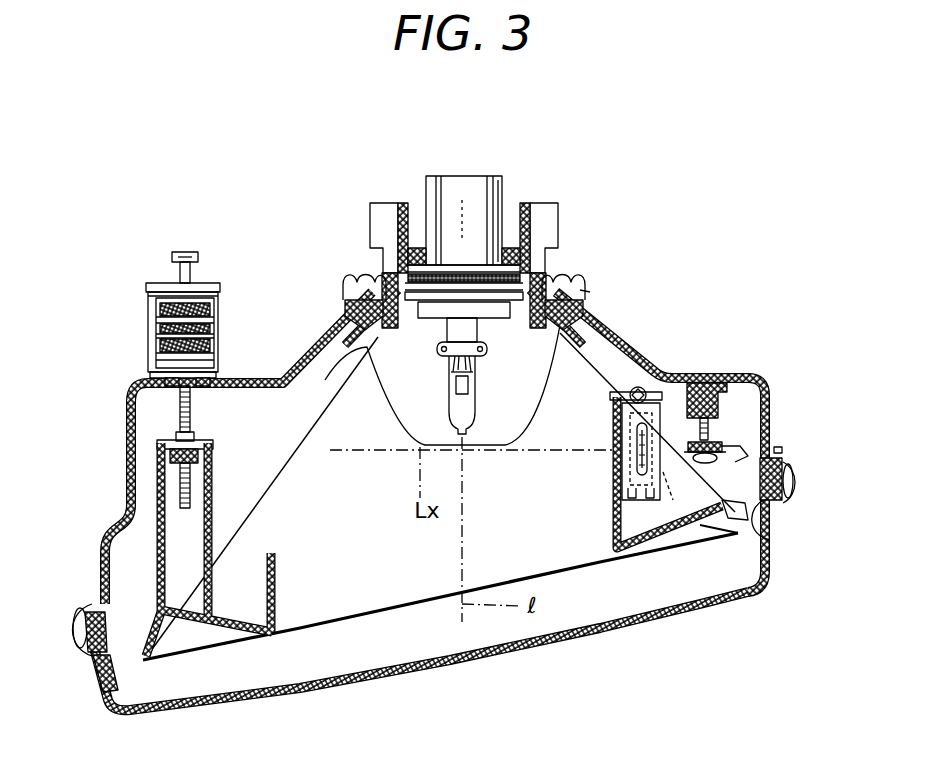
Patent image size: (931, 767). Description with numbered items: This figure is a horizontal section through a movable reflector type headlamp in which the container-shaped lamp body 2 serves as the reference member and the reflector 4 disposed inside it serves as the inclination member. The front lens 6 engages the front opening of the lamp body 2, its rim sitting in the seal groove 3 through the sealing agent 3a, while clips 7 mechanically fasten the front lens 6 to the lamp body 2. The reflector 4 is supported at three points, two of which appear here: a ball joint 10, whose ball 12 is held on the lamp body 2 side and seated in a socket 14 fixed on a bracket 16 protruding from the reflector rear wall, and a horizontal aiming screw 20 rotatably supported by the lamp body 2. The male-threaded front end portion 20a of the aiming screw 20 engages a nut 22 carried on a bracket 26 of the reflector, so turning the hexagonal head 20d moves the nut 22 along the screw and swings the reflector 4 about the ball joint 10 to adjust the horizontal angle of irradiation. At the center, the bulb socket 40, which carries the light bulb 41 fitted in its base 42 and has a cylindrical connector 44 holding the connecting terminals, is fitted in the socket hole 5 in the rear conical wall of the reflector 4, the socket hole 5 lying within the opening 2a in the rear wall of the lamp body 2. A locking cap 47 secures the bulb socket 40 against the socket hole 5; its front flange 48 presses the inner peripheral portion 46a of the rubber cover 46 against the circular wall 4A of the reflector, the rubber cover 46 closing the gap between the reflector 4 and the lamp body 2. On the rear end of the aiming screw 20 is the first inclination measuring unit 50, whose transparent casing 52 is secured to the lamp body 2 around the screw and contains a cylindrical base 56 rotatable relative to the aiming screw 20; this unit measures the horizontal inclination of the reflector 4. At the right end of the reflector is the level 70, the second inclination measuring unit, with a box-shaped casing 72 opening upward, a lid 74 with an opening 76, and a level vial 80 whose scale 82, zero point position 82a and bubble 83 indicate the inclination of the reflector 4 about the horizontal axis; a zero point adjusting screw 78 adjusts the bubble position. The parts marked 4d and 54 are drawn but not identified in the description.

The lamp body 2 is at (613, 338).
The opening 2a is at (582, 290).
The seal groove 3 is at (80, 640).
The sealing agent 3a is at (96, 680).
The reflector 4 is at (623, 350).
The circular wall 4A is at (320, 334).
The bottom wall of housing 4d is at (636, 552).
The socket hole 5 is at (427, 320).
The front lens 6 is at (437, 676).
The clips 7 is at (75, 625).
The ball joint 10 is at (720, 428).
The ball 12 is at (708, 457).
The socket 14 is at (780, 449).
The bracket 16 is at (724, 448).
The horizontal aiming screw 20 is at (174, 268).
The male-threaded front end portion 20a is at (177, 425).
The hexagonal head 20d is at (188, 252).
The nut 22 is at (160, 470).
The bracket 26 is at (155, 500).
The bulb socket 40 is at (422, 192).
The light bulb 41 is at (480, 407).
The base 42 is at (498, 323).
The cylindrical connector 44 is at (504, 190).
The rubber cover 46 is at (363, 268).
The inner peripheral portion 46a is at (340, 303).
The locking cap 47 is at (532, 205).
The flange 48 is at (541, 270).
The first inclination measuring unit 50 is at (146, 306).
The transparent casing 52 is at (219, 326).
The coil 54 is at (150, 338).
The cylindrical base 56 is at (218, 300).
The level 70 is at (705, 502).
The box-shaped casing 72 is at (630, 515).
The lid 74 is at (624, 488).
The opening 76 is at (636, 465).
The zero point adjusting screw 78 is at (695, 385).
The level vial 80 is at (625, 398).
The scale 82 is at (632, 440).
The zero point position 82a is at (620, 460).
The bubble 83 is at (662, 470).